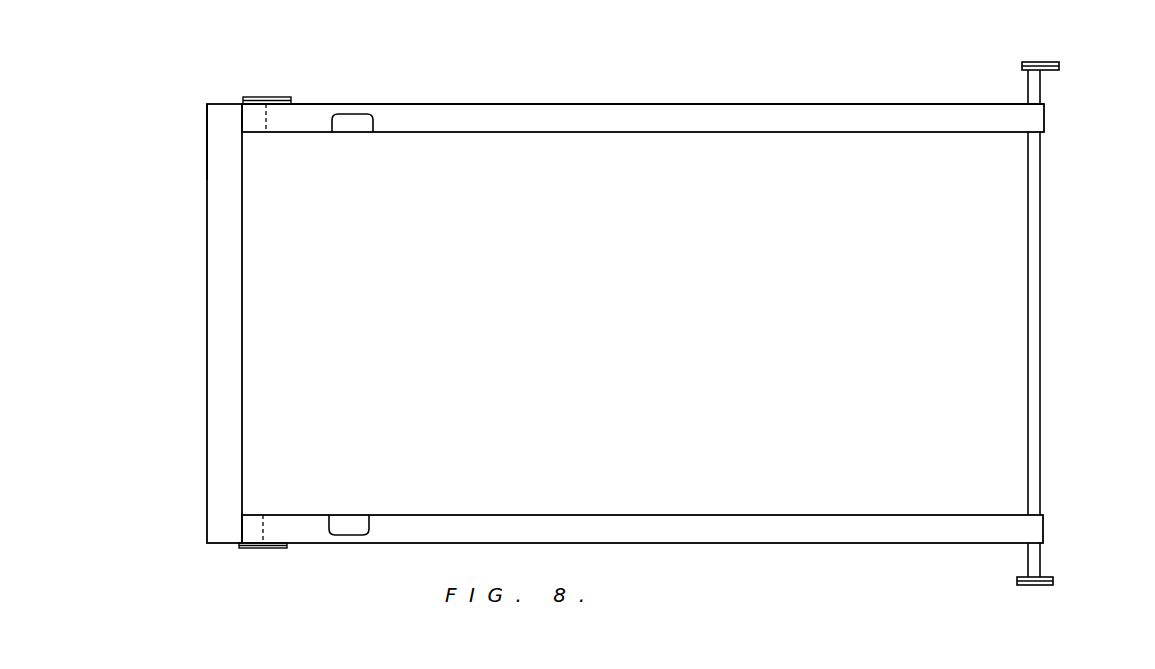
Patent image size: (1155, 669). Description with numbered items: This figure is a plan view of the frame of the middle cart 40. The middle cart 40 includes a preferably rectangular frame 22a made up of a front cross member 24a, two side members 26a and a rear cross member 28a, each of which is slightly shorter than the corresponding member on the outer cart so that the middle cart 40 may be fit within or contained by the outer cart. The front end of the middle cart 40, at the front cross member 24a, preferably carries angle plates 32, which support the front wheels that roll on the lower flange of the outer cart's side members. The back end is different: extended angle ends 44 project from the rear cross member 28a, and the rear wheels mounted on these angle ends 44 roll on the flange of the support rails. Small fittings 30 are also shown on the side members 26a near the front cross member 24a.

The frame 22a is at (446, 108).
The front cross member 24a is at (221, 216).
The side members 26a is at (530, 117).
The rear cross member 28a is at (1040, 188).
The clip 30 is at (357, 127).
The angle plates 32 is at (266, 97).
The middle cart 40 is at (205, 139).
The angle ends 44 is at (1036, 60).